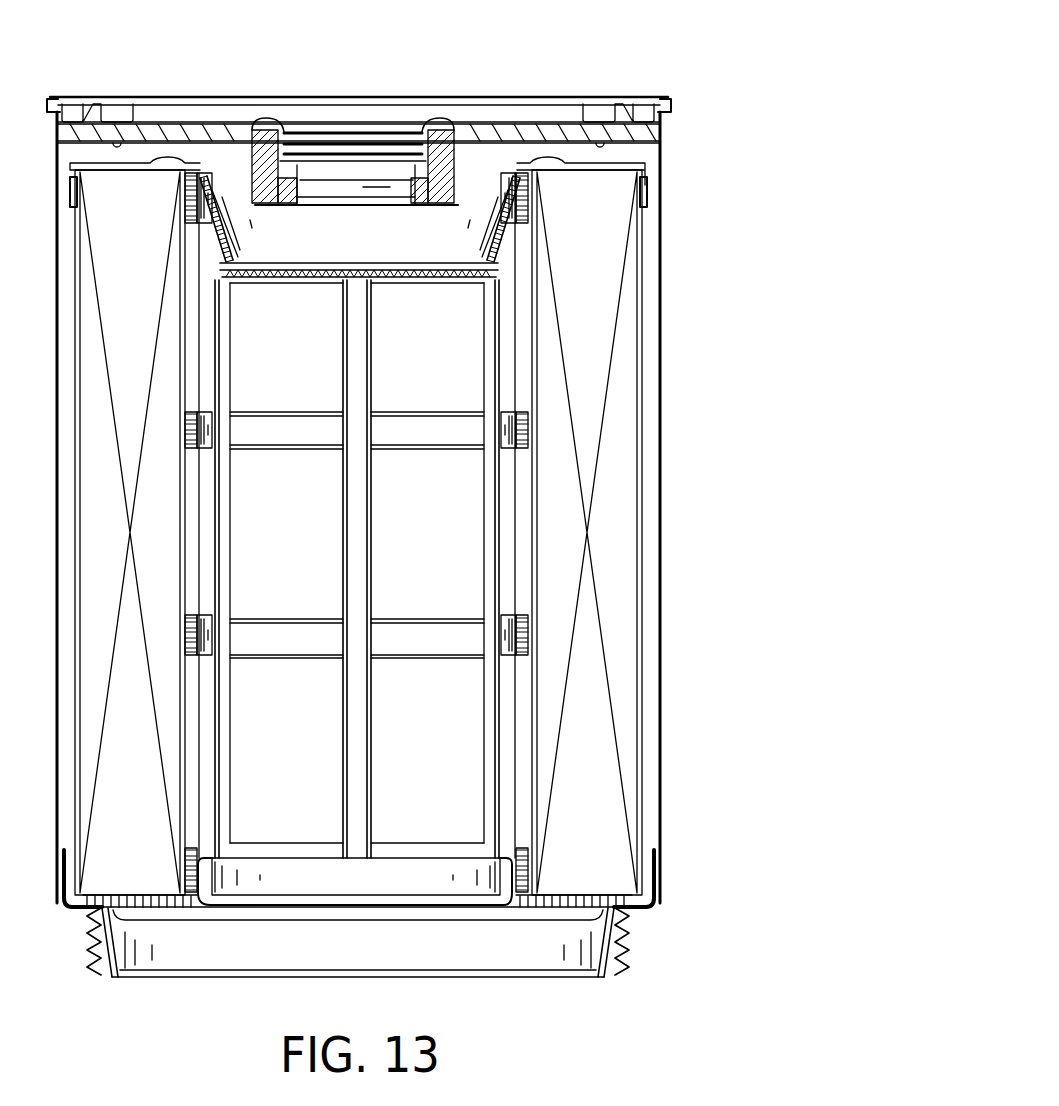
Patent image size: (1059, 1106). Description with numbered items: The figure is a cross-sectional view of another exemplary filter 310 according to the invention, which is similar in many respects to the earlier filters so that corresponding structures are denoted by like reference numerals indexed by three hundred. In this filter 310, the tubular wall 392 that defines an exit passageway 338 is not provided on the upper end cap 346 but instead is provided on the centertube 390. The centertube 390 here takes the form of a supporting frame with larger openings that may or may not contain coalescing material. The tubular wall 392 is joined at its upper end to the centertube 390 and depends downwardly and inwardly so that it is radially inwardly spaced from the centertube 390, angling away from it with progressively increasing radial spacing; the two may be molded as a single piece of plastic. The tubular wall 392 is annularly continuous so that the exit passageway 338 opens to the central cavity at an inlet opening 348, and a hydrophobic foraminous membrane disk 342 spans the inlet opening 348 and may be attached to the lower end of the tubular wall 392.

The filter 310 is at (690, 72).
The exit passageway 338 is at (385, 230).
The hydrophobic foraminous membrane disk 342 is at (423, 279).
The upper end cap 346 is at (646, 183).
The inlet opening 348 is at (443, 262).
The centertube 390 is at (220, 222).
The tubular wall 392 is at (212, 226).